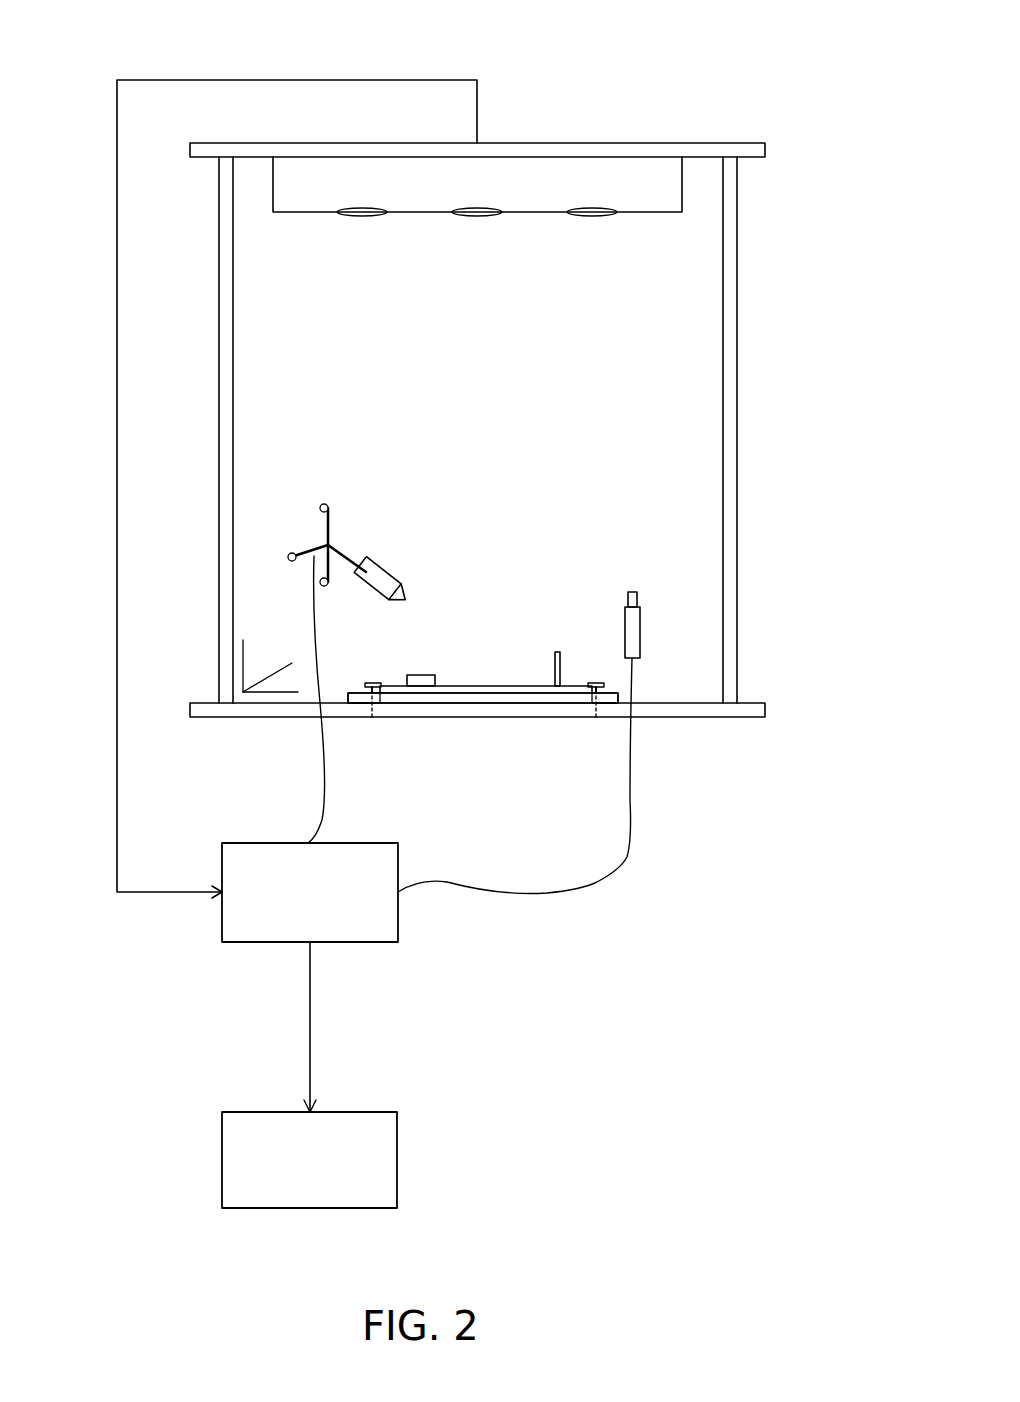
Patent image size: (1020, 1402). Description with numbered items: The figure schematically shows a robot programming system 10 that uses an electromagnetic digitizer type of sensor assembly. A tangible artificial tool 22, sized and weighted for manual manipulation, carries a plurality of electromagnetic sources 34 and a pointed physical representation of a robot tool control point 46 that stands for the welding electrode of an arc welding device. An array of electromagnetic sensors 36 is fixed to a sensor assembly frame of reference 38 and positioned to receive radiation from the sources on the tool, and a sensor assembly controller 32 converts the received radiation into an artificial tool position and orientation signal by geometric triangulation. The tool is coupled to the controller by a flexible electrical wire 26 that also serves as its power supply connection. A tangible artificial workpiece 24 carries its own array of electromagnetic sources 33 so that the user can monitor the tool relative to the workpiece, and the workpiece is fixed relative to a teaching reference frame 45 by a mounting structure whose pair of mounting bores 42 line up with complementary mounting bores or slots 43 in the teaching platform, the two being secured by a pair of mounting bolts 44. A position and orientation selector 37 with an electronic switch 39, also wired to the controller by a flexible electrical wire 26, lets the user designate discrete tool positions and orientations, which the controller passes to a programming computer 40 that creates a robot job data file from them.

The robot programming system 10 is at (713, 91).
The tangible artificial tool 22 is at (388, 570).
The tangible artificial workpiece 24 is at (555, 668).
The flexible electrical wire 26 is at (323, 756).
The sensor assembly controller 32 is at (398, 926).
The electromagnetic sources 33 is at (424, 675).
The electromagnetic sources 34 is at (326, 502).
The electromagnetic sensors 36 is at (362, 216).
The position and orientation selector 37 is at (625, 616).
The sensor assembly frame of reference 38 is at (234, 331).
The electronic switch 39 is at (632, 592).
The programming computer 40 is at (397, 1140).
The mounting bores 42 is at (366, 691).
The complementary mounting bores or slots 43 is at (378, 720).
The mounting bolts 44 is at (378, 683).
The teaching reference frame 45 is at (243, 690).
The physical representation of a robot tool control point 46 is at (405, 593).